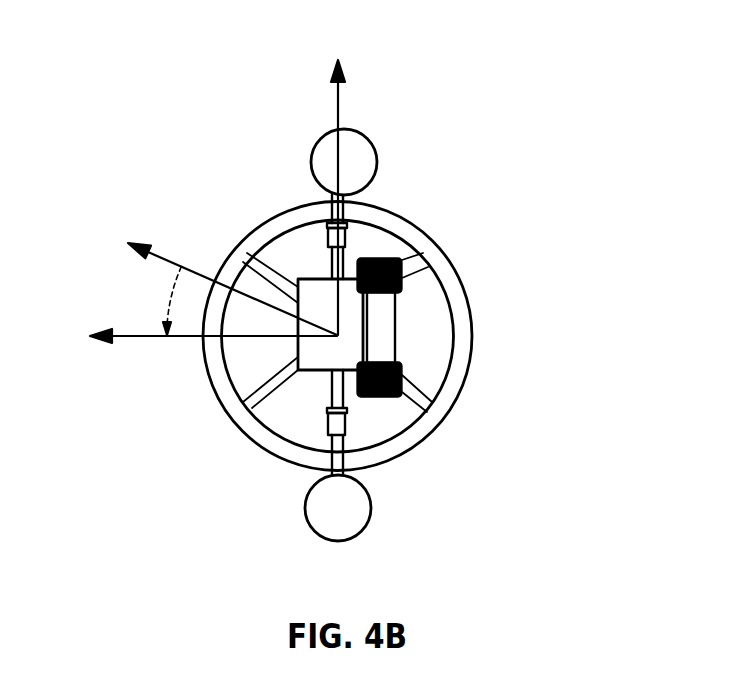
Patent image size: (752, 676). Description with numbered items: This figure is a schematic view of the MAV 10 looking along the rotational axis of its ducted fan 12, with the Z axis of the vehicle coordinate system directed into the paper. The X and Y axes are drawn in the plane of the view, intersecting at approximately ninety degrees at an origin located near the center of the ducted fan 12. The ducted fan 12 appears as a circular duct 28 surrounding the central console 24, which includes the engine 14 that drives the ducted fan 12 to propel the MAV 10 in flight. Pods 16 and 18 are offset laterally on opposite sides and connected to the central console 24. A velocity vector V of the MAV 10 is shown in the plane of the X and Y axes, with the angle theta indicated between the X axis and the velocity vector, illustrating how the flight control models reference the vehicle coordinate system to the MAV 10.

The MAV 10 is at (340, 298).
The ducted fan 12 is at (490, 350).
The engine 14 is at (417, 317).
The pod 16 is at (356, 533).
The pod 18 is at (325, 137).
The central console 24 is at (315, 368).
The duct 28 is at (242, 240).